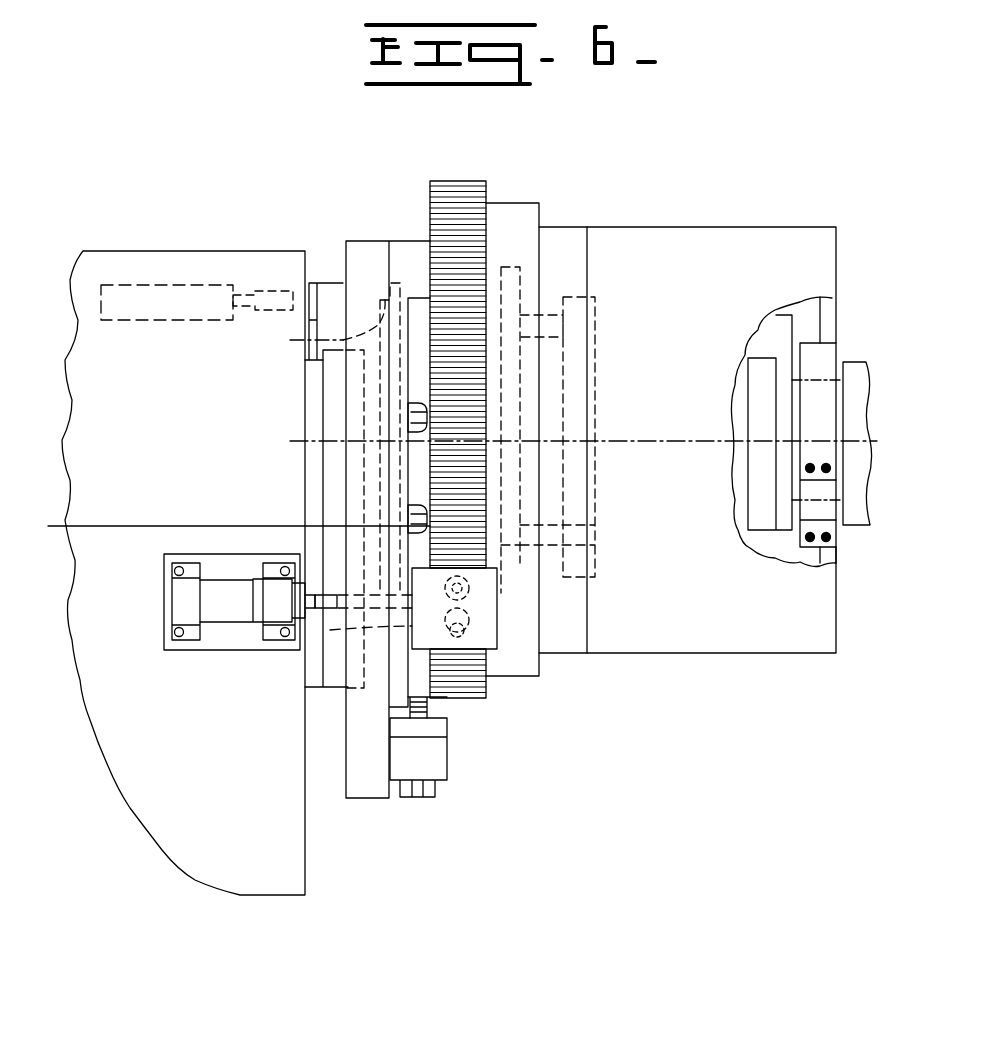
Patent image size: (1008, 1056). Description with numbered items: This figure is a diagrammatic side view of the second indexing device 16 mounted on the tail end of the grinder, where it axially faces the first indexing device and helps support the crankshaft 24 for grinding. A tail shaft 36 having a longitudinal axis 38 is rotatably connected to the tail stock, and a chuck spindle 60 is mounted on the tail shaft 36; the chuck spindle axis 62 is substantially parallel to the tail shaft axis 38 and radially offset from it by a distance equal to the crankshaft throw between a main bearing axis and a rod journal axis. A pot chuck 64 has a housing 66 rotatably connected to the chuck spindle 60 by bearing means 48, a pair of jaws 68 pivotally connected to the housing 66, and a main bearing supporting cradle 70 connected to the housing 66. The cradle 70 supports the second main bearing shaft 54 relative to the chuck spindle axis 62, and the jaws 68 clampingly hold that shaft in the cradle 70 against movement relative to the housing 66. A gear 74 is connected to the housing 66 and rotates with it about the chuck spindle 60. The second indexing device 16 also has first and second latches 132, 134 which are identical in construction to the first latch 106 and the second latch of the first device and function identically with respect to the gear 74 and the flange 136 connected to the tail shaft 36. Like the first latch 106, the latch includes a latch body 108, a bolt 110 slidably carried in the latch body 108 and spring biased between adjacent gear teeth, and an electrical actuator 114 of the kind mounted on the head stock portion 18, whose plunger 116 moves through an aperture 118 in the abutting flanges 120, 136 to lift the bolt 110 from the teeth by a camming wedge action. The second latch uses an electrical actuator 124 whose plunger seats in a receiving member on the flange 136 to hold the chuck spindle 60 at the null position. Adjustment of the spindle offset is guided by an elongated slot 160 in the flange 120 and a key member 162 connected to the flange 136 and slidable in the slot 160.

The second indexing device 16 is at (598, 210).
The head stock portion 18 is at (243, 772).
The crankshaft 24 is at (847, 520).
The tail shaft 36 is at (328, 488).
The tail shaft axis 38 is at (136, 526).
The bearing means 48 is at (568, 348).
The second main bearing shaft 54 is at (845, 397).
The chuck spindle 60 is at (598, 384).
The chuck spindle axis 62 is at (290, 441).
The pot chuck 64 is at (826, 367).
The housing 66 is at (700, 228).
The jaws 68 is at (830, 297).
The main bearing supporting cradle 70 is at (815, 549).
The gear 74 is at (484, 183).
The first latch 106 is at (512, 657).
The latch body 108 is at (497, 618).
The bolt 110 is at (497, 630).
The electrical actuator 114 is at (225, 600).
The plunger 116 is at (320, 580).
The aperture 118 is at (330, 672).
The flange 120 is at (430, 697).
The electrical actuator 124 is at (190, 318).
The first latch 132 is at (294, 652).
The second latch 134 is at (262, 287).
The flange 136 is at (375, 790).
The elongated slot 160 is at (385, 300).
The key member 162 is at (305, 342).